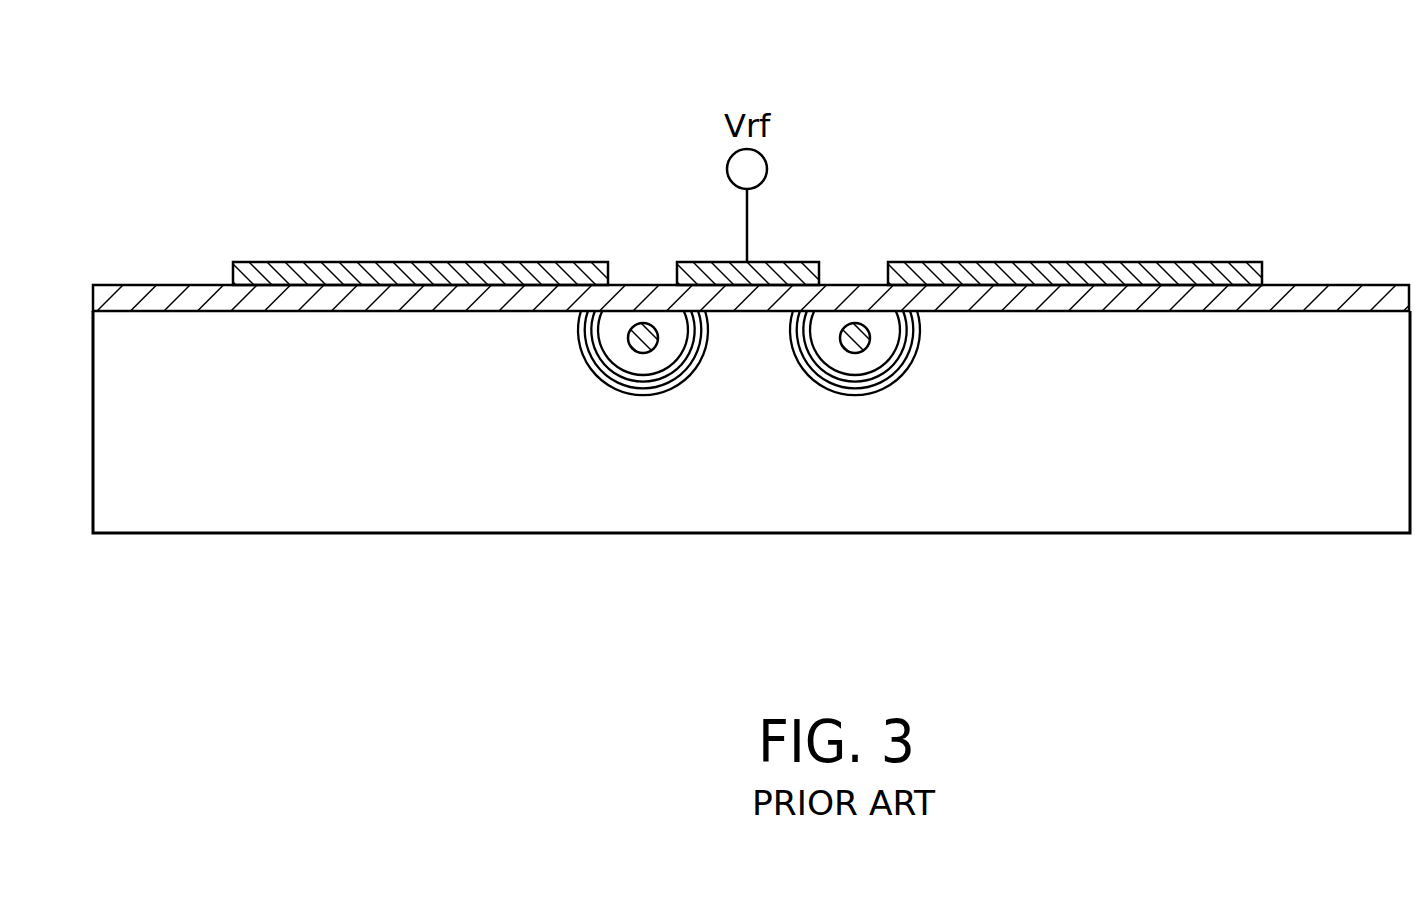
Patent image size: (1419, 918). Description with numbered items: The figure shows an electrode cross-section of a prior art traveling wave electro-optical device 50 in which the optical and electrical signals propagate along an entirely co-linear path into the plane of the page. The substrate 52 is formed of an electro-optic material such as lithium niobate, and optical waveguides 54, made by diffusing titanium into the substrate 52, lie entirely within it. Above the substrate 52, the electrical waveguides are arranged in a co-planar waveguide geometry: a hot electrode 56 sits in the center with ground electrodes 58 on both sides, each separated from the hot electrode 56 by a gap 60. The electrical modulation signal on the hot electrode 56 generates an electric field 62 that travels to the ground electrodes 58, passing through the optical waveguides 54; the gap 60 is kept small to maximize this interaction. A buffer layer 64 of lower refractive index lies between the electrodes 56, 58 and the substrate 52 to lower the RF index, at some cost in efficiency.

The traveling wave electro-optical device 50 is at (903, 53).
The substrate 52 is at (1242, 520).
The optical waveguides 54 is at (643, 353).
The hot electrode 56 is at (733, 262).
The ground electrodes 58 is at (416, 262).
The gap 60 is at (643, 247).
The electric field 62 is at (888, 347).
The buffer layer 64 is at (167, 285).